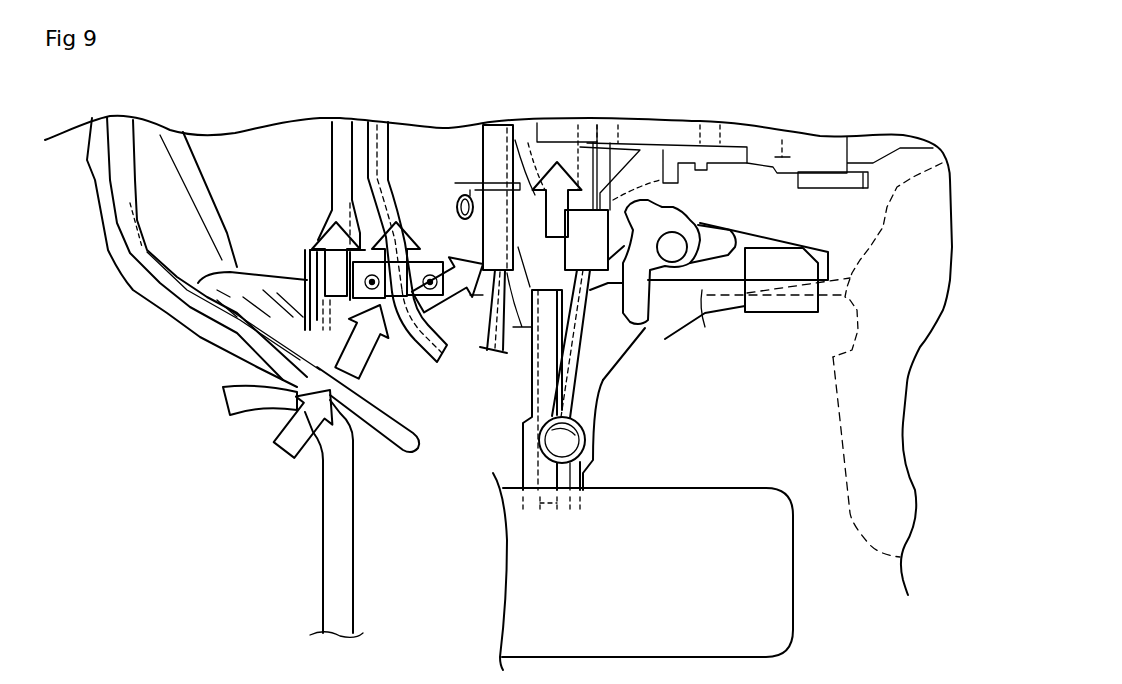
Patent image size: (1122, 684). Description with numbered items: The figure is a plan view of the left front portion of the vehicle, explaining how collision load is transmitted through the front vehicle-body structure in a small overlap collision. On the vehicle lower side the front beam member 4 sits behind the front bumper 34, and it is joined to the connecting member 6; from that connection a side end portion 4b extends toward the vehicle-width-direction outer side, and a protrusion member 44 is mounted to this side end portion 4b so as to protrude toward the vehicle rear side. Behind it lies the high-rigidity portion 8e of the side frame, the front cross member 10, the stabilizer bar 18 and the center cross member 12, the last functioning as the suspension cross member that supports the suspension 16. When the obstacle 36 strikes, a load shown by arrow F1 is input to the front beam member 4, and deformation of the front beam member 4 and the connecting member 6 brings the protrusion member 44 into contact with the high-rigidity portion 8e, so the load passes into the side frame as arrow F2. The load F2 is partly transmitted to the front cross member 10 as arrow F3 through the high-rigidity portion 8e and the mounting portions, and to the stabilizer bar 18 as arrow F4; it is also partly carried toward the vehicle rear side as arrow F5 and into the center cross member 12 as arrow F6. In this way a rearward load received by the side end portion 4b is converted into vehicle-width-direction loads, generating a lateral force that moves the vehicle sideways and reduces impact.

The front beam member 4 is at (110, 203).
The front bumper 34 is at (113, 273).
The connecting member 6 is at (263, 277).
The front cross member 10 is at (330, 143).
The stabilizer bar 18 is at (387, 155).
The center cross member 12 is at (483, 133).
The protrusion member 44 is at (380, 380).
The high-rigidity portion 8e is at (443, 322).
The suspension 16 is at (633, 407).
The side end portion 4b is at (368, 435).
The obstacle 36 is at (353, 593).
The input load arrow F1 is at (313, 433).
The transmitted load arrow F2 is at (370, 357).
The load arrow to front cross member F3 is at (317, 247).
The load arrow to stabilizer bar F4 is at (413, 230).
The rearward load arrow F5 is at (432, 262).
The load arrow to center cross member F6 is at (563, 160).